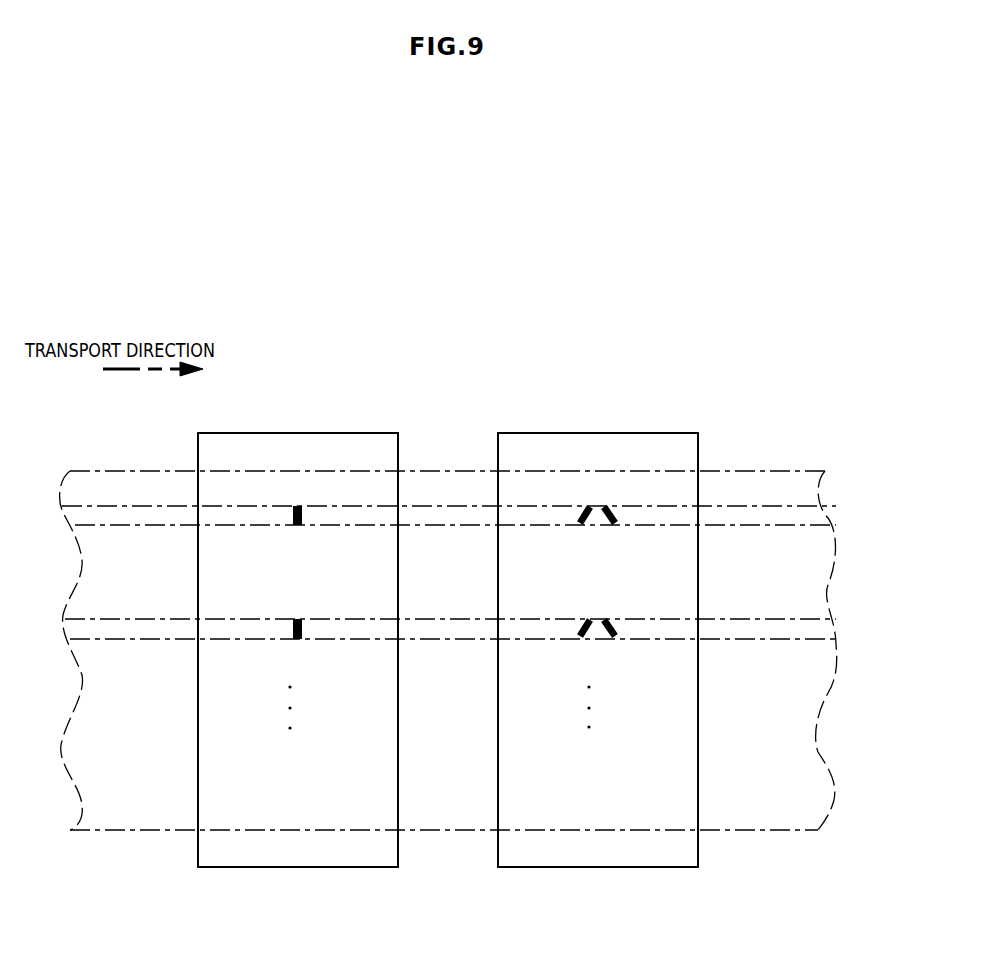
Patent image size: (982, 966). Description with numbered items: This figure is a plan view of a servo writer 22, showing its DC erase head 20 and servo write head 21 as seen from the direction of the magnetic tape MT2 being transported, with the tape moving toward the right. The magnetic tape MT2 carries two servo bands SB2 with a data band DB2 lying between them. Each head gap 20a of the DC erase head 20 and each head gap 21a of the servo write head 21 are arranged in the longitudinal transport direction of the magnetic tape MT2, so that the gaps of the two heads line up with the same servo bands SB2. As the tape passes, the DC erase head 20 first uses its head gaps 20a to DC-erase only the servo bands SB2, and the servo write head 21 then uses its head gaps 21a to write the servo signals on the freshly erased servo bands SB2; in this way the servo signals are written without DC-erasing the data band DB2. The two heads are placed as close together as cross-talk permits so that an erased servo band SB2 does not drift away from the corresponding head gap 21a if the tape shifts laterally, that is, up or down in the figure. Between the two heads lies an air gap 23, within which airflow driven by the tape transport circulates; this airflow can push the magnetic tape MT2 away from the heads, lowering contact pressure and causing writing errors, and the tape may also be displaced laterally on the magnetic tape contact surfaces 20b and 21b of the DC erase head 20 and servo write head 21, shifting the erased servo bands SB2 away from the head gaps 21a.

The DC erase head 20 is at (298, 433).
The head gaps of DC erase head 20a is at (302, 524).
The magnetic tape contact surface of DC erase head 20b is at (340, 490).
The servo write head 21 is at (598, 433).
The head gaps of servo write head 21a is at (585, 523).
The magnetic tape contact surface of servo write head 21b is at (640, 490).
The servo writer 22 is at (612, 285).
The air gap 23 is at (448, 452).
The magnetic tape MT2 is at (728, 471).
The servo bands SB2 is at (760, 523).
The data band DB2 is at (780, 550).